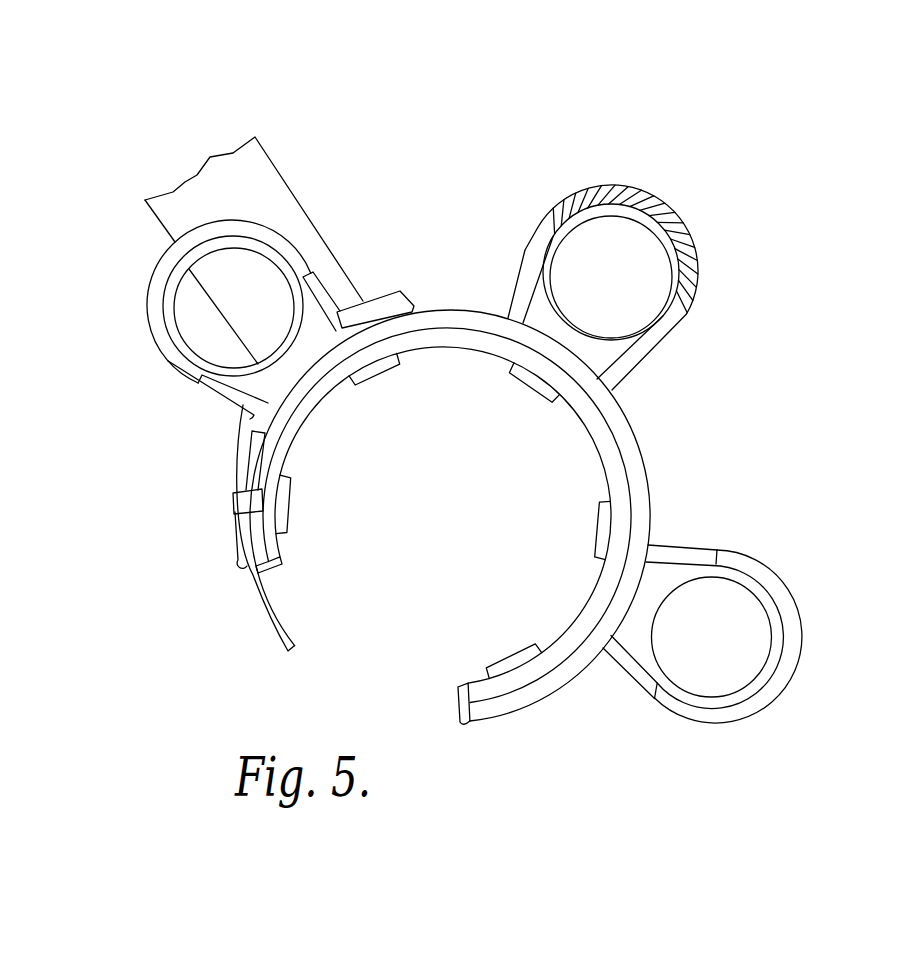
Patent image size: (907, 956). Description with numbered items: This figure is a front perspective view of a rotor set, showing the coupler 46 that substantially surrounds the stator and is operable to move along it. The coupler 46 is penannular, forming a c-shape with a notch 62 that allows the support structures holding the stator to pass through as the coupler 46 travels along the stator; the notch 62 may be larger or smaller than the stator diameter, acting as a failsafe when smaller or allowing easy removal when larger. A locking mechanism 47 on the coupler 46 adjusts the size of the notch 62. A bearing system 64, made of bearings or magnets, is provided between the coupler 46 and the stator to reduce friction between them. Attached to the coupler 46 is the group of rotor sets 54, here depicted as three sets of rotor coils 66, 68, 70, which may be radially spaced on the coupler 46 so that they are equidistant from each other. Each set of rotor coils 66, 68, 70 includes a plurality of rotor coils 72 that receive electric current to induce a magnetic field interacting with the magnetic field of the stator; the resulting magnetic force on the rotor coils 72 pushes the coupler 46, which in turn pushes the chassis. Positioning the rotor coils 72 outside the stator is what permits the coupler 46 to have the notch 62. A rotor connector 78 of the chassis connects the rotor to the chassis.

The coupler 46 is at (641, 481).
The locking mechanism 47 is at (233, 494).
The group of rotor sets 54 is at (488, 206).
The notch 62 is at (270, 562).
The bearing system 64 is at (522, 376).
The set of rotor coils 66 is at (170, 360).
The set of rotor coils 68 is at (640, 198).
The set of rotor coils 70 is at (781, 596).
The rotor coils 72 is at (671, 257).
The rotor connector 78 is at (263, 190).